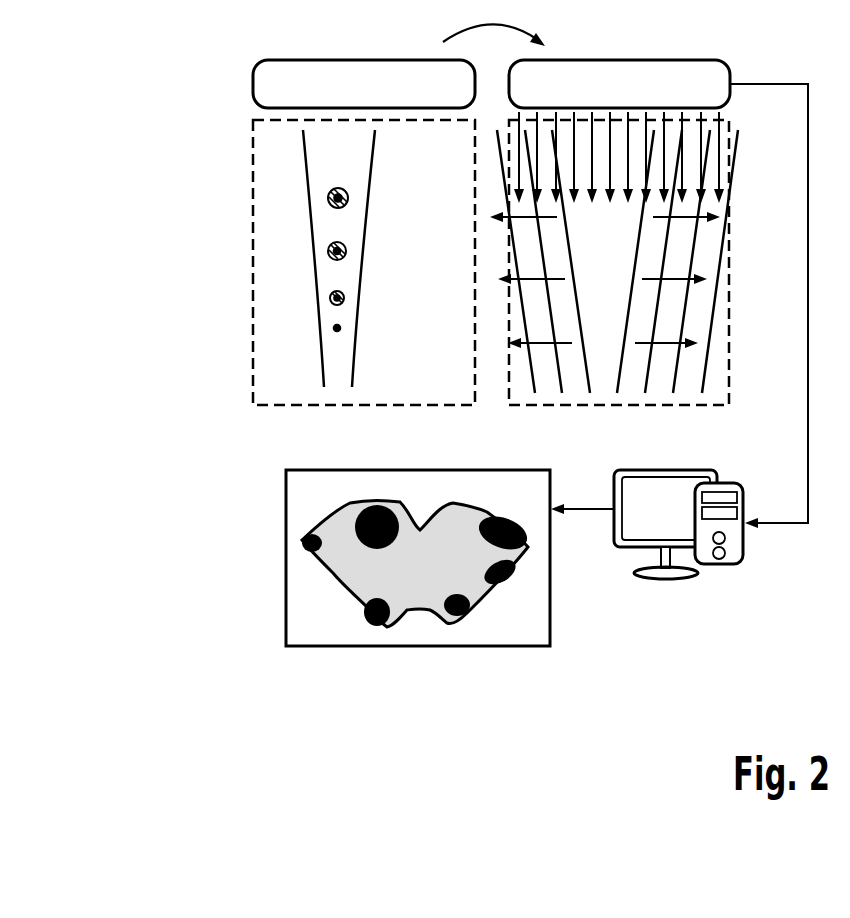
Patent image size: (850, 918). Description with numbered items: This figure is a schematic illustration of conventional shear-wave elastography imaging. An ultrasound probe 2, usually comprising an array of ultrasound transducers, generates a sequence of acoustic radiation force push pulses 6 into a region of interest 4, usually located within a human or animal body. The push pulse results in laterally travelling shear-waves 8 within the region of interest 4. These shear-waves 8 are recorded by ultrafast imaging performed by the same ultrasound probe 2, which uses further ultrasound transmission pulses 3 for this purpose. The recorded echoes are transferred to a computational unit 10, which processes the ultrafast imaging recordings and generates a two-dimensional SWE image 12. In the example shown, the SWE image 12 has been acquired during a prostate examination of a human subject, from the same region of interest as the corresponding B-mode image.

The ultrasound probe 2 is at (253, 79).
The ultrasound transmission pulses 3 is at (722, 127).
The region of interest 4 is at (253, 289).
The acoustic radiation force push pulses 6 is at (308, 168).
The shear-waves 8 is at (722, 260).
The computational unit 10 is at (745, 542).
The 2D SWE image 12 is at (285, 585).